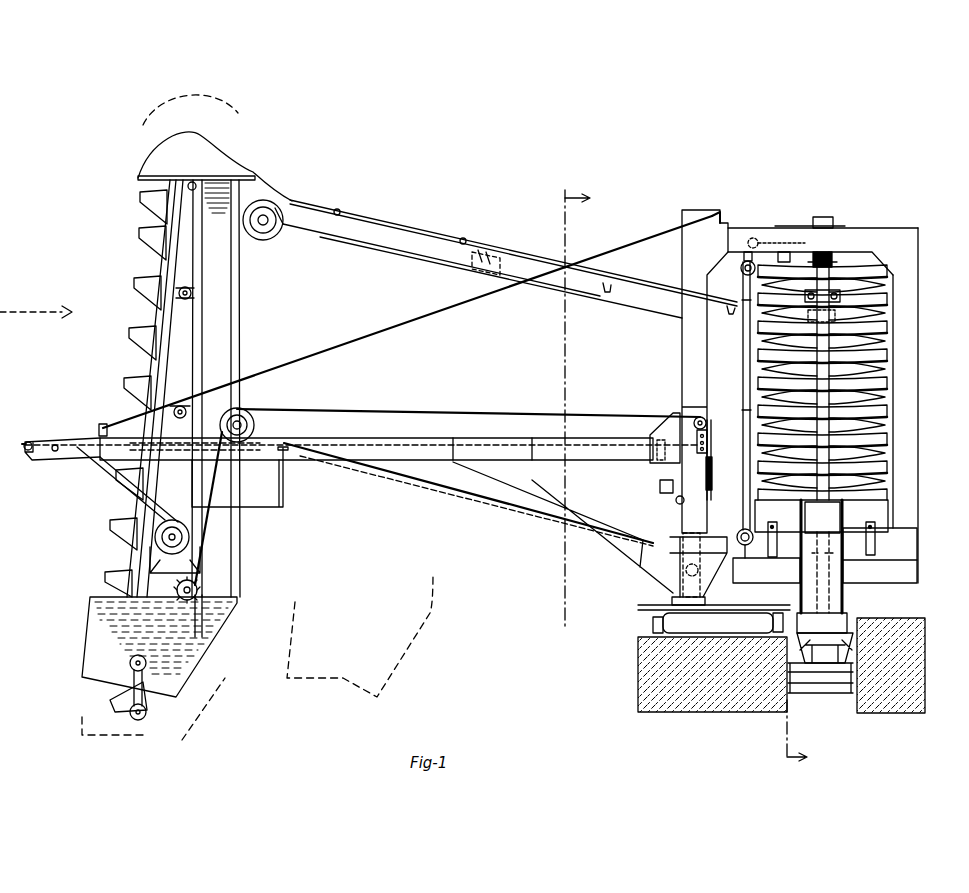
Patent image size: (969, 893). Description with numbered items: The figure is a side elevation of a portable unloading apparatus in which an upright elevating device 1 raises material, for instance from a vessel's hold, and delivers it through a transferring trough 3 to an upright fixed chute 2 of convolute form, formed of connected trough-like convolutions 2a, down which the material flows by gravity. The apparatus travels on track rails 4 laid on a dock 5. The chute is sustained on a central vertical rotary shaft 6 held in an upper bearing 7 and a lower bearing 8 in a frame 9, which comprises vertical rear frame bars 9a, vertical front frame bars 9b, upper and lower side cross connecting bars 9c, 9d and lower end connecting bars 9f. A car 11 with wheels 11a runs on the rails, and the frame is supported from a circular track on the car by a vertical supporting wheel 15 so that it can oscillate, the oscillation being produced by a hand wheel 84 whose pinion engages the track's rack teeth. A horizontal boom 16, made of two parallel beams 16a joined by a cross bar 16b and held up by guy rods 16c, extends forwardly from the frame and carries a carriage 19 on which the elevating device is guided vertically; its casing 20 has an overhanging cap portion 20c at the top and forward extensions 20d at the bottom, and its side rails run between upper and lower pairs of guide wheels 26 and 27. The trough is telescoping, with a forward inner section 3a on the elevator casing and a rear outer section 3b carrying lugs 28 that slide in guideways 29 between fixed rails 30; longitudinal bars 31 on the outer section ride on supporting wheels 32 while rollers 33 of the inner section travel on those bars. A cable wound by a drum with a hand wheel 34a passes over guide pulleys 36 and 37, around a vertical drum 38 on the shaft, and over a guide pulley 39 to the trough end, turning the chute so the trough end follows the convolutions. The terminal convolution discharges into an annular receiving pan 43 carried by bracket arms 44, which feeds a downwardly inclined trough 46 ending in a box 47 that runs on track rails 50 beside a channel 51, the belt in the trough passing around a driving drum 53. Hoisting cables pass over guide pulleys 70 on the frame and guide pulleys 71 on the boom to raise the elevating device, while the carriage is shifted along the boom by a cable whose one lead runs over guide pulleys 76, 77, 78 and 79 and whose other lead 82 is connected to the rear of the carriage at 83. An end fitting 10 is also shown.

The elevating device 1 is at (95, 357).
The upright chute 2 is at (957, 379).
The convolutions 2a is at (890, 412).
The transferring trough 3 is at (513, 251).
The forward inner section 3a is at (427, 252).
The rear outer section 3b is at (640, 306).
The track rails 4 is at (610, 686).
The dock 5 is at (668, 713).
The vertical rotary shaft 6 is at (848, 332).
The upper bearing 7 is at (830, 221).
The lower bearing 8 is at (827, 555).
The frame 9 is at (920, 482).
The vertical rear frame bars 9a is at (907, 343).
The vertical front frame bars 9b is at (687, 367).
The upper side horizontal cross connecting frame bars 9c is at (862, 238).
The lower side horizontal cross connecting frame bars 9d is at (857, 576).
The lower end horizontal connecting bars 9f is at (908, 573).
The beam end fitting 10 is at (24, 448).
The truck or car 11 is at (735, 626).
The wheels 11a is at (651, 626).
The vertical supporting wheel 15 is at (822, 601).
The horizontal boom 16 is at (450, 465).
The beams 16a is at (393, 452).
The horizontal cross bar 16b is at (32, 461).
The guy rods 16c is at (373, 336).
The carriage 19 is at (262, 510).
The upright casing 20 is at (225, 338).
The overhanging cap portion 20c is at (225, 160).
The forward extensions or walls 20d is at (182, 663).
The upper guide wheels 26 is at (192, 449).
The lower guide wheels 27 is at (207, 518).
The lugs or blocks 28 is at (735, 308).
The vertical guideways 29 is at (743, 374).
The vertical fixed rails 30 is at (740, 457).
The longitudinal bars 31 is at (500, 257).
The supporting wheels 32 is at (276, 206).
The rollers 33 is at (341, 212).
The hand wheel 34a is at (738, 537).
The guide pulley 36 is at (745, 273).
The guide pulley 37 is at (783, 251).
The vertical drum 38 is at (835, 246).
The guide pulley 39 is at (757, 238).
The annular receiving pan 43 is at (875, 521).
The upright bracket arms 44 is at (872, 546).
The downwardly inclined trough 46 is at (847, 572).
The box or receptacle 47 is at (822, 623).
The track rails 50 is at (887, 621).
The channel or passageway 51 is at (814, 722).
The driving drum 53 is at (853, 651).
The guide pulleys 70 is at (706, 422).
The guide pulleys 71 is at (247, 418).
The guide pulley 76 is at (682, 506).
The guide pulley 77 is at (675, 494).
The guide pulley 78 is at (660, 487).
The guide pulley 79 is at (657, 447).
The cable lead 82 is at (525, 512).
The connection 83 is at (284, 451).
The hand wheel 84 is at (805, 514).